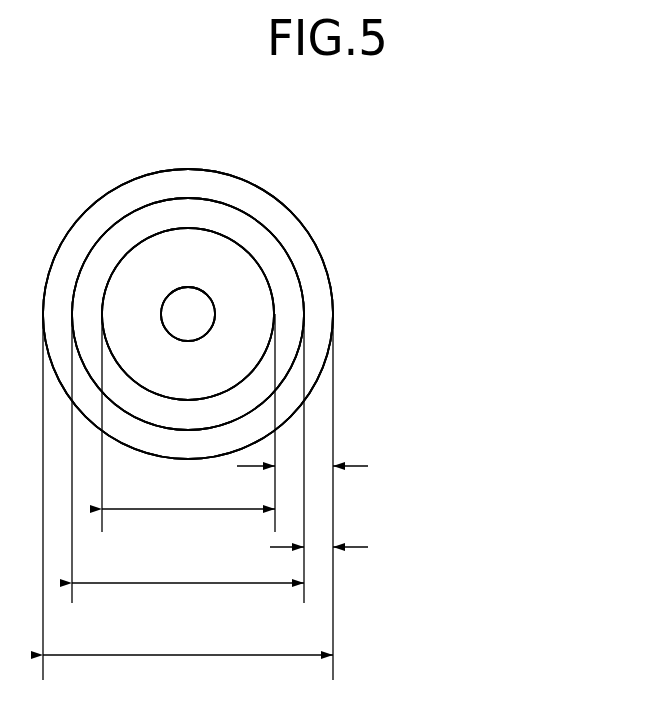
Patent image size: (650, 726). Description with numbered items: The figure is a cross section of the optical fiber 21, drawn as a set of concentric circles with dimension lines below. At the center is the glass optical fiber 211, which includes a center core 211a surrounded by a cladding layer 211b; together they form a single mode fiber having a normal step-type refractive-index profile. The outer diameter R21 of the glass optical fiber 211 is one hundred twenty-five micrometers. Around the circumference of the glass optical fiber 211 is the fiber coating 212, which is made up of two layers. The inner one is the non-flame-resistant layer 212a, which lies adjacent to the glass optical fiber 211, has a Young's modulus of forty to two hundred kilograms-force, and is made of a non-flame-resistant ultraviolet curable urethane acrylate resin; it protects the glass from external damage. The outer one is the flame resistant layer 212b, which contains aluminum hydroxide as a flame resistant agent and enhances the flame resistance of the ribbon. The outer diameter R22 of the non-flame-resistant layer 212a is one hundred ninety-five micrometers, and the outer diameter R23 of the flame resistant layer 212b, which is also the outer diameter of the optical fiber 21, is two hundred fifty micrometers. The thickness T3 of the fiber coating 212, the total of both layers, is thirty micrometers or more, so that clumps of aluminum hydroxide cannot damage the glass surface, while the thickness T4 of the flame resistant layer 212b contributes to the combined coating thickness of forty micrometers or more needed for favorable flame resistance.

The optical fiber 21 is at (322, 146).
The glass optical fiber 211 is at (505, 242).
The center core 211a is at (190, 312).
The cladding layer 211b is at (257, 327).
The fiber coating 212 is at (473, 140).
The non-flame-resistant layer 212a is at (263, 230).
The flame resistant layer 212b is at (260, 197).
The outer diameter of the glass optical fiber R21 is at (188, 495).
The outer diameter of the non-flame-resistant layer R22 is at (188, 566).
The outer diameter of the optical fiber R23 is at (188, 638).
The thickness of the fiber coating T3 is at (322, 468).
The thickness of the flame resistant layer T4 is at (339, 548).